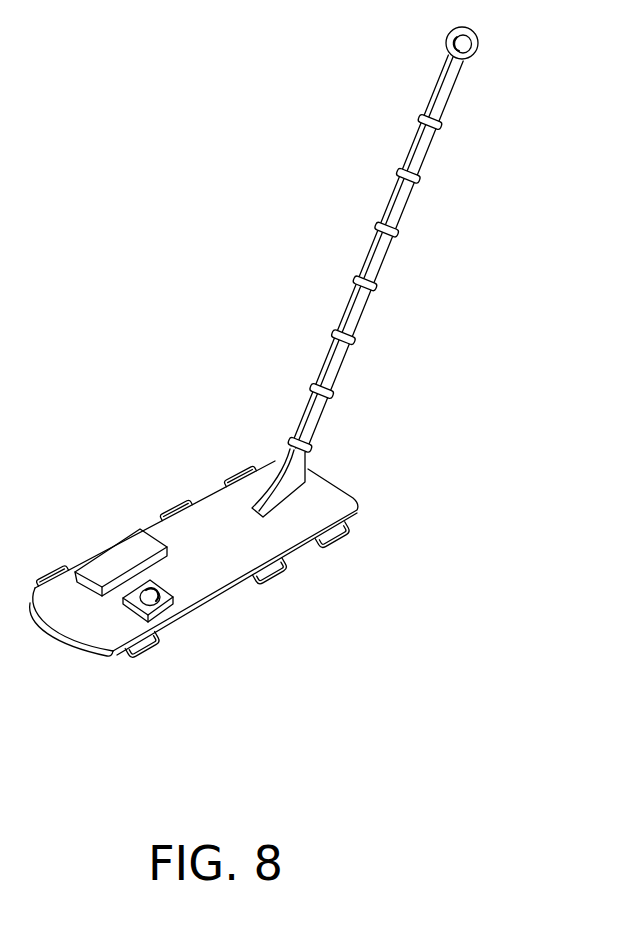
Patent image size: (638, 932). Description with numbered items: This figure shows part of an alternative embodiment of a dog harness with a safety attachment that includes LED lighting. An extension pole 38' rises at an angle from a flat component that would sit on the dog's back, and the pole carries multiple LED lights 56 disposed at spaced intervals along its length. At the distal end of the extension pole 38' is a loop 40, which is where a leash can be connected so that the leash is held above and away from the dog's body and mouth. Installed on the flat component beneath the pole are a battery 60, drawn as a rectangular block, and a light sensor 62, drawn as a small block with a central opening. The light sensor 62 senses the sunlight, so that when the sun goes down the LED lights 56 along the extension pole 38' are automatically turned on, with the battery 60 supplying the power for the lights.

The loop 40 is at (477, 36).
The LED lights 56 is at (420, 182).
The extension pole 38' is at (357, 286).
The battery 60 is at (107, 550).
The light sensor 62 is at (158, 610).